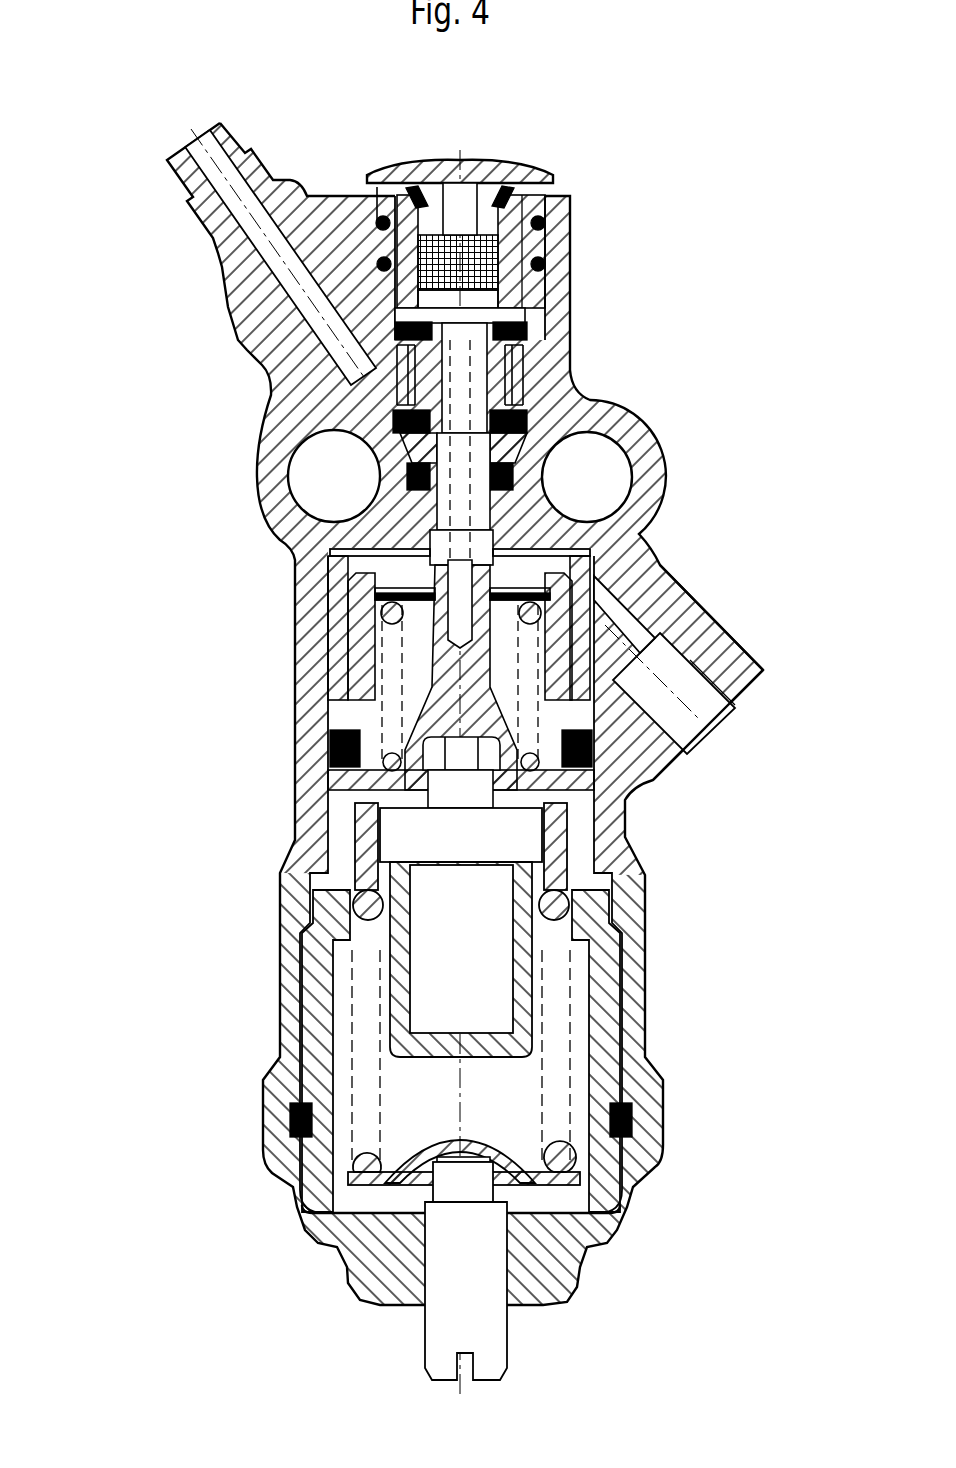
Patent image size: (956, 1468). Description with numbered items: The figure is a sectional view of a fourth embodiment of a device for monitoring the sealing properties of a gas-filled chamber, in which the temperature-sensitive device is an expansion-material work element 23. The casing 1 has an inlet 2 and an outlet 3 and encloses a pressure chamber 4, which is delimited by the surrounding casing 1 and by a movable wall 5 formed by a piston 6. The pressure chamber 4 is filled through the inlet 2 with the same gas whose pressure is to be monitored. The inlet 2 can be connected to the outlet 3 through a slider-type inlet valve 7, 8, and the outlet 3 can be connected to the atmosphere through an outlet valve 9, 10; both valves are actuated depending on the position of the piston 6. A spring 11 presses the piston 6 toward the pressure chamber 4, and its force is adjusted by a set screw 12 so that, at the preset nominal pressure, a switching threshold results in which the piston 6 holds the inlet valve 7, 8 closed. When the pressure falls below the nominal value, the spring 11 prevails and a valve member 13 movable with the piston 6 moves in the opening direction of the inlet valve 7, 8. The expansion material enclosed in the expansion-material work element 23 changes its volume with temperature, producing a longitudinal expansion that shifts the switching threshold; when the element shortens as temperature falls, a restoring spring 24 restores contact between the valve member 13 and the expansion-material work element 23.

The casing 1 is at (653, 1107).
The inlet 2 is at (688, 737).
The outlet 3 is at (203, 167).
The pressure chamber 4 is at (688, 735).
The movable wall 5 is at (540, 567).
The piston 6 is at (400, 957).
The inlet valve 7 is at (530, 405).
The inlet valve 8 is at (525, 437).
The outlet valve 9 is at (447, 333).
The outlet valve 10 is at (445, 327).
The spring 11 is at (367, 1057).
The set screw 12 is at (437, 1345).
The valve member 13 is at (432, 507).
The expansion-material work element 23 is at (423, 883).
The restoring spring 24 is at (383, 646).